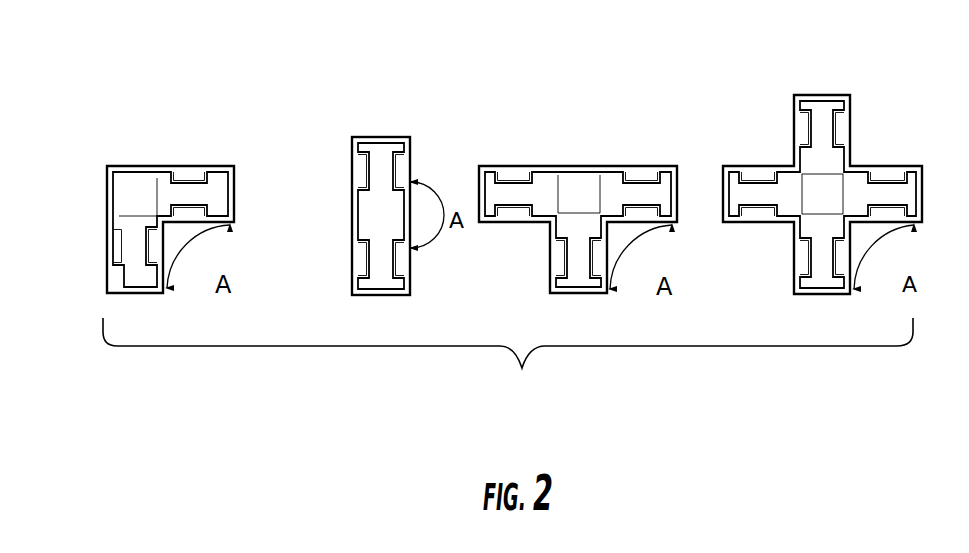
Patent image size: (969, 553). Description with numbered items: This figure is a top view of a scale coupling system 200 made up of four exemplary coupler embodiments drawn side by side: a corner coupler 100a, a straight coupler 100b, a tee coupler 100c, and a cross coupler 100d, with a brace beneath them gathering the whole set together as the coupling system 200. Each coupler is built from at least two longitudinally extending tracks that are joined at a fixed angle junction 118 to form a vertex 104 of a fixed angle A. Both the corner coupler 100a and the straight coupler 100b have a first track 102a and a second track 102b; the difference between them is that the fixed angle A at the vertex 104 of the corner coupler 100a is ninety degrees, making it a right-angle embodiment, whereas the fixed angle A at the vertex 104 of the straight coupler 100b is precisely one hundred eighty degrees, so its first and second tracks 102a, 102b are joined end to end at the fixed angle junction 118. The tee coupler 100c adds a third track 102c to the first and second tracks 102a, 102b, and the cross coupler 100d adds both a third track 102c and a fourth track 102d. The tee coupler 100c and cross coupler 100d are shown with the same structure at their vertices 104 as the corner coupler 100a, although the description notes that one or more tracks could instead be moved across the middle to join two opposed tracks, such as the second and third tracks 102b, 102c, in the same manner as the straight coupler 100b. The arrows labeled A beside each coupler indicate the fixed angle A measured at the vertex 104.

The corner coupler 100a is at (162, 136).
The straight coupler 100b is at (385, 117).
The tee coupler 100c is at (568, 133).
The cross coupler 100d is at (823, 69).
The first track 102a is at (107, 272).
The second track 102b is at (204, 166).
The third track 102c is at (486, 165).
The fourth track 102d is at (793, 110).
The vertex 104 is at (165, 224).
The fixed angle junction 118 is at (157, 216).
The scale coupling system 200 is at (508, 360).